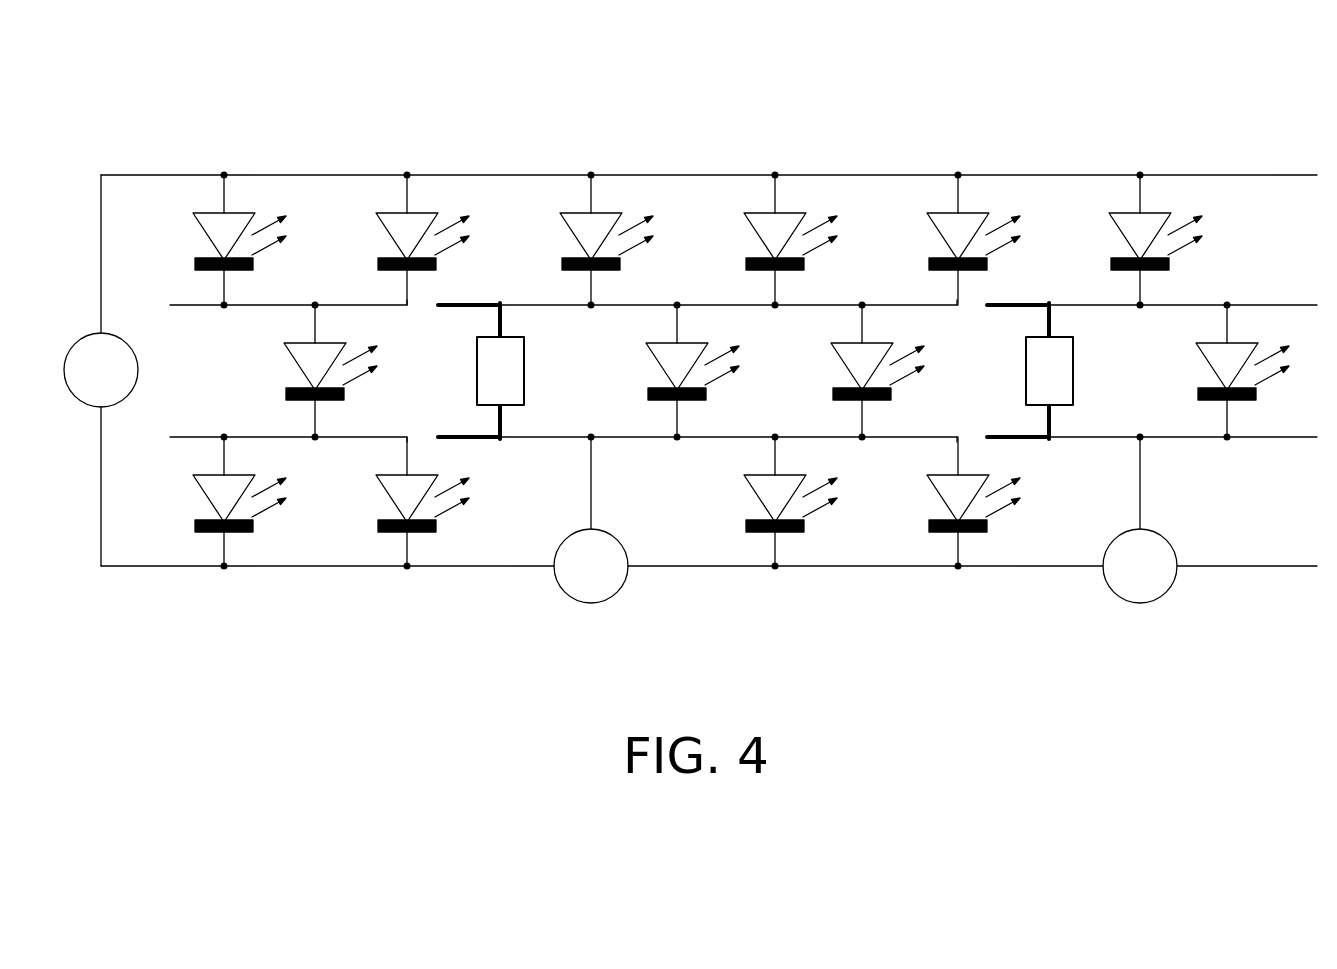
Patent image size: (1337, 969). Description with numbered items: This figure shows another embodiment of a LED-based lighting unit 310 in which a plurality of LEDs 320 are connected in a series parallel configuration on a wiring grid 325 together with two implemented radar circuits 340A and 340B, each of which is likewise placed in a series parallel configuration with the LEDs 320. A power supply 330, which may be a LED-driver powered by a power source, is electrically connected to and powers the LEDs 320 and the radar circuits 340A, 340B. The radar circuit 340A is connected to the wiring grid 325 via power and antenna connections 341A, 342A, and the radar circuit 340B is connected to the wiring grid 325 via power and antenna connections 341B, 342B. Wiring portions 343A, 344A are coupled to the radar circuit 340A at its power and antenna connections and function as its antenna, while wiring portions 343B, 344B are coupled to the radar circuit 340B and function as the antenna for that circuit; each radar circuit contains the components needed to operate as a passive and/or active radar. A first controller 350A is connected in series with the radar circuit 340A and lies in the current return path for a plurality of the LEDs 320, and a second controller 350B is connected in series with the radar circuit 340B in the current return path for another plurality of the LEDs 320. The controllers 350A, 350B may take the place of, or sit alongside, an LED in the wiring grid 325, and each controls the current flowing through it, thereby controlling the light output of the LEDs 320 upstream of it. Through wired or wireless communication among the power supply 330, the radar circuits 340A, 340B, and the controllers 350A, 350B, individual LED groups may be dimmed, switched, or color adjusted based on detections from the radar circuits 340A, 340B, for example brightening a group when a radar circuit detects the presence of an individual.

The LED-based lighting unit 310 is at (1216, 124).
The LEDs 320 is at (206, 253).
The wiring grid 325 is at (163, 175).
The power supply 330 is at (79, 343).
The radar circuit 340A is at (476, 358).
The radar circuit 340B is at (1025, 358).
The power and antenna connection 341A is at (503, 322).
The power and antenna connection 341B is at (1052, 322).
The power and antenna connection 342A is at (505, 408).
The power and antenna connection 342B is at (1054, 408).
The wiring portion 343A is at (478, 309).
The wiring portion 343B is at (1027, 309).
The wiring portion 344A is at (477, 434).
The wiring portion 344B is at (1026, 434).
The first controller 350A is at (566, 596).
The second controller 350B is at (1115, 596).